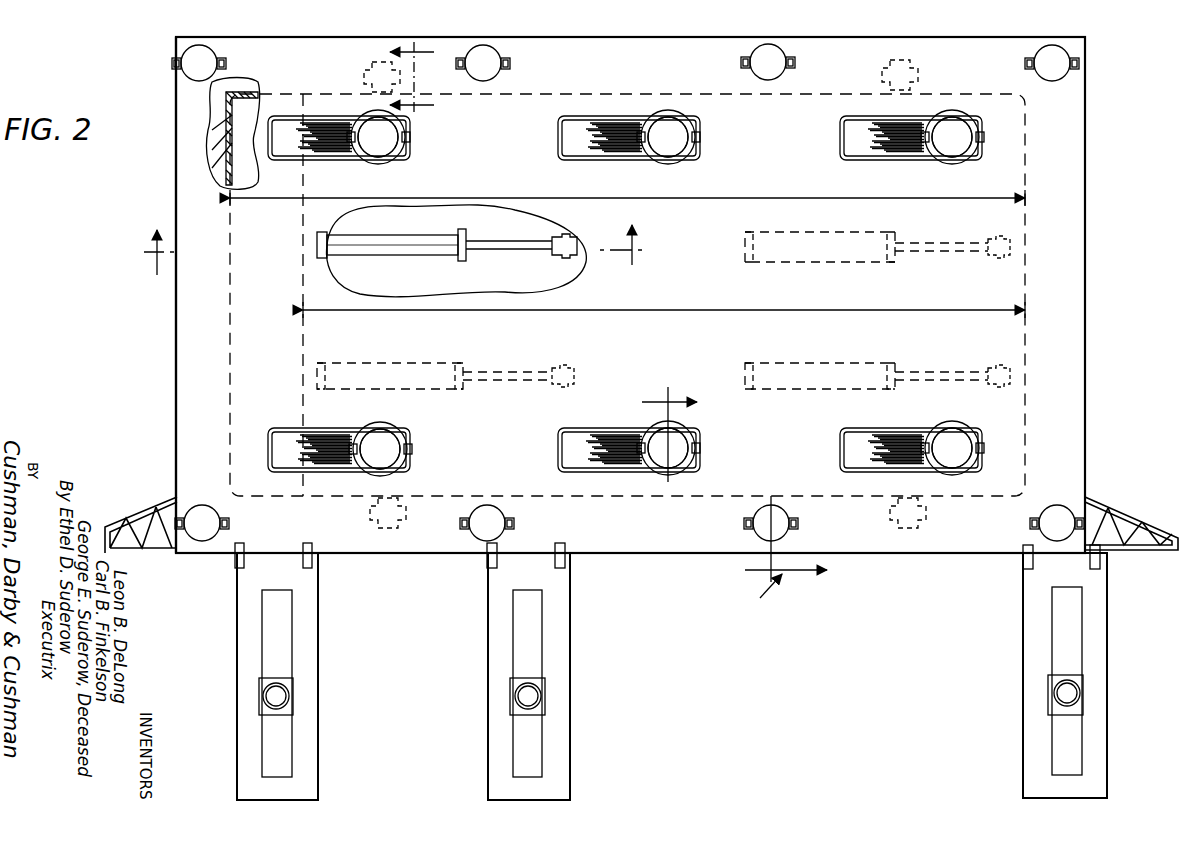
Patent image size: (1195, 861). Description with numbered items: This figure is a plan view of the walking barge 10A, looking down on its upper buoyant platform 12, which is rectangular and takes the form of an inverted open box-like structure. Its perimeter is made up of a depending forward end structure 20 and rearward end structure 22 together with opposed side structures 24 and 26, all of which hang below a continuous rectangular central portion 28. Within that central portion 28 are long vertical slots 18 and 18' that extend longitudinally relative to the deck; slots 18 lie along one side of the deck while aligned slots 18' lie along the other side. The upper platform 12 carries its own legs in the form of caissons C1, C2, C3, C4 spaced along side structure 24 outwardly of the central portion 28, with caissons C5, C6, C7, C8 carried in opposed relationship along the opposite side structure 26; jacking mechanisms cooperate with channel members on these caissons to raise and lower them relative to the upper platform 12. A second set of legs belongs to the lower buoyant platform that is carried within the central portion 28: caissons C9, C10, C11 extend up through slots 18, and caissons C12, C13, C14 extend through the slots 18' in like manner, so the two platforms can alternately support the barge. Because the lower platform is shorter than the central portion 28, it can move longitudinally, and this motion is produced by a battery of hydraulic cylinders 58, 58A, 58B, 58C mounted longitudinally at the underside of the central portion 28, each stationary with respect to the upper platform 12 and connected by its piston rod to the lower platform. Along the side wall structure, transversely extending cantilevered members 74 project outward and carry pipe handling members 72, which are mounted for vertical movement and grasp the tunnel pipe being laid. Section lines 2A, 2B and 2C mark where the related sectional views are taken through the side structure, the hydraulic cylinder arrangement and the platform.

The upper buoyant platform 12 is at (198, 214).
The forward end structure 20 is at (188, 312).
The rearward end structure 22 is at (1065, 332).
The side structure 24 is at (356, 47).
The side structure 26 is at (680, 548).
The central portion 28 is at (672, 358).
The vertical slots 18 is at (626, 113).
The vertical slots 18' is at (623, 477).
The hydraulic cylinder 58 is at (822, 374).
The hydraulic cylinder 58A is at (834, 256).
The hydraulic cylinder 58B is at (422, 248).
The hydraulic cylinder 58C is at (444, 374).
The pipe handling members 72 is at (534, 696).
The cantilevered members 74 is at (568, 635).
The walking barge 10A is at (750, 598).
The section line 2A is at (722, 486).
The section line 2B is at (391, 252).
The section line 2C is at (422, 76).
The caisson C1 is at (192, 68).
The caisson C2 is at (492, 58).
The caisson C3 is at (774, 60).
The caisson C4 is at (1048, 58).
The caisson C5 is at (198, 514).
The caisson C6 is at (500, 520).
The caisson C7 is at (756, 526).
The caisson C8 is at (1046, 526).
The caisson C9 is at (390, 148).
The caisson C10 is at (676, 144).
The caisson C11 is at (954, 146).
The caisson C12 is at (384, 444).
The caisson C13 is at (688, 442).
The caisson C14 is at (960, 444).